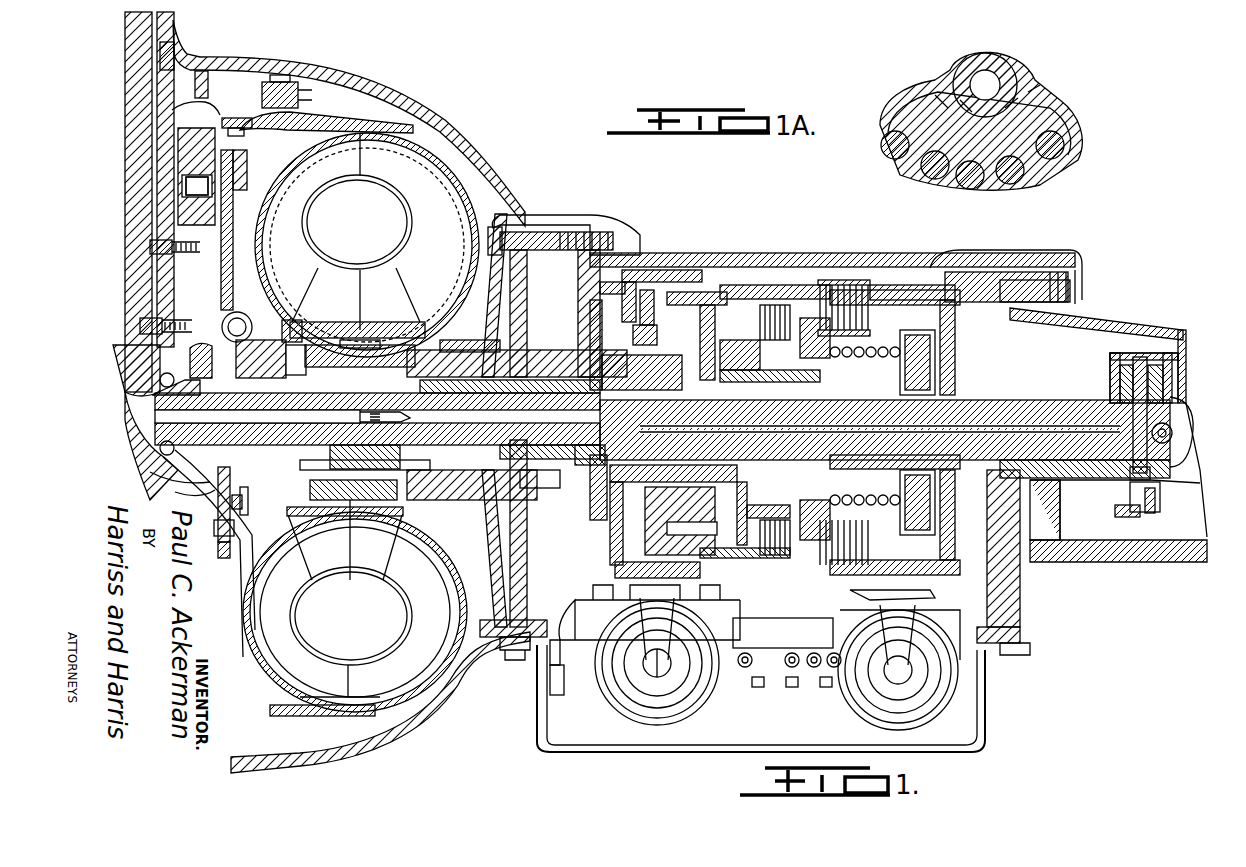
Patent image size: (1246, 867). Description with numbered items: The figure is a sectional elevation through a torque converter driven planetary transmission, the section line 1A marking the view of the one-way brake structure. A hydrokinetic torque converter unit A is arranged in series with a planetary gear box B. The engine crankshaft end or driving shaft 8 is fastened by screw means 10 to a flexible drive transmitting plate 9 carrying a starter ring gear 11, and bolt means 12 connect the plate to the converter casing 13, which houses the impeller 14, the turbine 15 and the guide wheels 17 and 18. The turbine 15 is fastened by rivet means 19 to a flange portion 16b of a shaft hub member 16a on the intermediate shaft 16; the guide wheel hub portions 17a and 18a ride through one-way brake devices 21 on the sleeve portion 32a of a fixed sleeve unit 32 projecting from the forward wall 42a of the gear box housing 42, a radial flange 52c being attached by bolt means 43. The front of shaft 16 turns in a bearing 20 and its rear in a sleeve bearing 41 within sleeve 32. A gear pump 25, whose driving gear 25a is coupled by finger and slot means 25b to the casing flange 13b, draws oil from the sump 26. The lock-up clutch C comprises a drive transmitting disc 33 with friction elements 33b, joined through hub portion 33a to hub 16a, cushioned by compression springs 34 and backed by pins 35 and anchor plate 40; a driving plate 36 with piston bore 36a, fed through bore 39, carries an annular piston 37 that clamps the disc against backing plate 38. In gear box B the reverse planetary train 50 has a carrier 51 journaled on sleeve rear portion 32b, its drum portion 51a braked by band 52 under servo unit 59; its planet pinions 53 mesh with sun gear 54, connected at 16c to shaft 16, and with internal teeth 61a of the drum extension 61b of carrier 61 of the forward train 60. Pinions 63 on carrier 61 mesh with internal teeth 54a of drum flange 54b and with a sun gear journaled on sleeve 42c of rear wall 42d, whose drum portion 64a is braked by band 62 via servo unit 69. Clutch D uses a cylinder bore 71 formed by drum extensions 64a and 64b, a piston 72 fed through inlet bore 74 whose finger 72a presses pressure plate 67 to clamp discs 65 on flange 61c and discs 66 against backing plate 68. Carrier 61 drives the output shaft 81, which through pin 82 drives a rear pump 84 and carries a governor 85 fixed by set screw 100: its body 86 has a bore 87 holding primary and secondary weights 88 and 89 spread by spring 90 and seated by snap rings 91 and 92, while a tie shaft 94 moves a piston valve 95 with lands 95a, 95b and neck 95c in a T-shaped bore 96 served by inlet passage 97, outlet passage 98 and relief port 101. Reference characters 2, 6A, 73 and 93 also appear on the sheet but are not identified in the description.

In FIG. 1, the driving shaft 8 is at (150, 445).
In FIG. 1, the drive transmitting plate 9 is at (128, 282).
In FIG. 1, the screw means 10 is at (138, 324).
In FIG. 1, the engine starter ring gear 11 is at (218, 63).
In FIG. 1, the bolt means 12 is at (150, 246).
In FIG. 1, the torque converter casing 13 is at (330, 118).
In FIG. 1, the impeller member 14 is at (418, 251).
In FIG. 1, the turbine member 15 is at (302, 200).
In FIG. 1, the intermediate driven shaft 16 is at (362, 348).
In FIG. 1A, the intermediate driven shaft 16 is at (955, 68).
In FIG. 1, the shaft hub member 16a is at (290, 346).
In FIG. 1, the flange portion 16b is at (300, 315).
In FIG. 1, the driving connection 16c is at (770, 459).
In FIG. 1, the guide wheel 17 is at (314, 297).
In FIG. 1, the hub portion 17a is at (303, 533).
In FIG. 1, the guide wheel 18 is at (398, 301).
In FIG. 1, the hub portion 18a is at (385, 525).
In FIG. 1A, the hub portion 18a is at (1068, 146).
In FIG. 1, the rivet means 19 is at (270, 328).
In FIG. 1, the bearing 20 is at (140, 378).
In FIG. 1A, the one-way brake devices 21 is at (1030, 174).
In FIG. 1, the gear type oil pump 25 is at (475, 345).
In FIG. 1, the driving gear 25a is at (540, 479).
In FIG. 1, the finger and slot means 25b is at (530, 432).
In FIG. 1, the sump 26 is at (545, 745).
In FIG. 1, the fixed sleeve unit 32 is at (592, 462).
In FIG. 1, the sleeve portion 32a is at (440, 400).
In FIG. 1A, the sleeve portion 32a is at (1022, 90).
In FIG. 1, the rear portion 32b is at (590, 447).
In FIG. 1, the drive transmitting disc 33 is at (218, 500).
In FIG. 1, the hub portion 33a is at (212, 360).
In FIG. 1, the friction elements 33b is at (300, 222).
In FIG. 1, the compression spring elements 34 is at (305, 276).
In FIG. 1, the pins 35 is at (300, 552).
In FIG. 1, the driving plate 36 is at (178, 170).
In FIG. 1, the piston bore 36a is at (178, 150).
In FIG. 1, the annular piston 37 is at (182, 205).
In FIG. 1, the clutch backing plate 38 is at (318, 188).
In FIG. 1, the bore 39 is at (185, 480).
In FIG. 1, the clutch disc anchor plate 40 is at (236, 500).
In FIG. 1, the sleeve-type bearing 41 is at (590, 397).
In FIG. 1, the gear box housing 42 is at (680, 255).
In FIG. 1, the forward wall portion 42a is at (578, 310).
In FIG. 1, the sleeve 42c is at (947, 440).
In FIG. 1, the rear housing wall 42d is at (1015, 272).
In FIG. 1, the bolt means 43 is at (599, 337).
In FIG. 1, the reverse drive planetary gear train 50 is at (690, 270).
In FIG. 1, the planet pinion carrier 51 is at (648, 355).
In FIG. 1, the peripheral drum portion 51a is at (622, 278).
In FIG. 1, the braking band 52 is at (618, 236).
In FIG. 1, the flange 52c is at (605, 308).
In FIG. 1, the planet pinions 53 is at (653, 505).
In FIG. 1, the sun gear member 54 is at (686, 493).
In FIG. 1, the internal teeth 54a is at (753, 569).
In FIG. 1, the drum-like flange portion 54b is at (773, 583).
In FIG. 1, the servo unit 59 is at (690, 701).
In FIG. 1, the forward drive planetary gear train 60 is at (800, 302).
In FIG. 1, the planet carrier 61 is at (780, 358).
In FIG. 1, the internal teeth 61a is at (738, 285).
In FIG. 1, the drum-like extension 61b is at (765, 309).
In FIG. 1, the axially extending flange 61c is at (856, 489).
In FIG. 1, the braking band 62 is at (903, 582).
In FIG. 1, the planet pinions 63 is at (798, 338).
In FIG. 1, the brake drum portion 64a is at (948, 272).
In FIG. 1, the drumlike extension 64b is at (880, 522).
In FIG. 1, the clutch discs 65 is at (813, 579).
In FIG. 1, the clutch discs 66 is at (852, 280).
In FIG. 1, the clutch pressure plate 67 is at (900, 285).
In FIG. 1, the backing plate 68 is at (832, 300).
In FIG. 1, the servo unit 69 is at (855, 706).
In FIG. 1, the pressure cylinder bore 71 is at (928, 546).
In FIG. 1, the clutch actuating piston 72 is at (917, 362).
In FIG. 1, the finger portion 72a is at (857, 578).
In FIG. 1, the shaft 73 is at (866, 404).
In FIG. 1, the pressure fluid inlet bore 74 is at (963, 411).
In FIG. 1, the output shaft 81 is at (966, 456).
In FIG. 1, the pin 82 is at (1025, 417).
In FIG. 1, the second gear type oil pump 84 is at (1110, 365).
In FIG. 1, the governor 85 is at (1178, 358).
In FIG. 1, the valve body 86 is at (1110, 356).
In FIG. 1, the cylindrical bore 87 is at (1124, 346).
In FIG. 1, the primary weight 88 is at (1118, 370).
In FIG. 1, the secondary weight 89 is at (1165, 374).
In FIG. 1, the compression spring 90 is at (1165, 388).
In FIG. 1, the snap ring 91 is at (1160, 340).
In FIG. 1, the snap ring 92 is at (1142, 357).
In FIG. 1, the shaft end 93 is at (1133, 450).
In FIG. 1, the tie shaft 94 is at (1133, 420).
In FIG. 1, the governor control valve 95 is at (1158, 512).
In FIG. 1, the land 95a is at (1160, 472).
In FIG. 1, the land 95b is at (1160, 504).
In FIG. 1, the neck portion 95c is at (1160, 490).
In FIG. 1, the T-shaped bore 96 is at (1130, 518).
In FIG. 1, the inlet passage 97 is at (1084, 410).
In FIG. 1, the outlet passage 98 is at (1103, 511).
In FIG. 1, the set screw 100 is at (1173, 433).
In FIG. 1, the relief port 101 is at (1106, 517).
In FIG. 1, the section line 1A is at (398, 416).
In FIG. 1, the hub 2 is at (338, 462).
In FIG. 1, the sleeve 6A is at (796, 456).
In FIG. 1, the hydrokinetic torque converter unit A is at (432, 127).
In FIG. 1, the planetary gear box B is at (785, 256).
In FIG. 1, the torque converter lock-up clutch C is at (200, 140).
In FIG. 1, the clutch mechanism D is at (866, 280).
In FIG. 1, the flange portion 13b is at (486, 412).